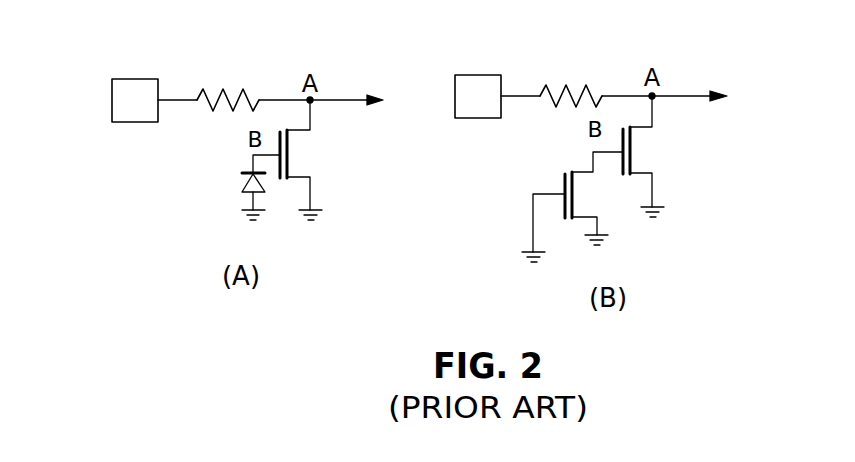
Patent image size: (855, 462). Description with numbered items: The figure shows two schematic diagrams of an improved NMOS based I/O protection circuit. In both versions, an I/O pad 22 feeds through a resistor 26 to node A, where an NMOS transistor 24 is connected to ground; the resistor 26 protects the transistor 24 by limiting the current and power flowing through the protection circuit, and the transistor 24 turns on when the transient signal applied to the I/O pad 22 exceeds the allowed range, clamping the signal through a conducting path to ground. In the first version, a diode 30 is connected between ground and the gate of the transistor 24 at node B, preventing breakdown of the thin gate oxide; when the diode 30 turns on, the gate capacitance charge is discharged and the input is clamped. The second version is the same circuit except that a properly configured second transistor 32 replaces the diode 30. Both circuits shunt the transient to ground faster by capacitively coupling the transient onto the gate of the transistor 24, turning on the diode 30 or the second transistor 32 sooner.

In FIG. 2A, the I/O pad 22 is at (135, 100).
In FIG. 2B, the I/O pad 22 is at (478, 96).
In FIG. 2A, the resistor 26 is at (245, 89).
In FIG. 2B, the resistor 26 is at (588, 85).
In FIG. 2A, the NMOS transistor T1 24 is at (297, 180).
In FIG. 2B, the NMOS transistor T1 24 is at (642, 177).
In FIG. 2A, the diode D1 30 is at (245, 191).
In FIG. 2B, the transistor T2 32 is at (587, 220).